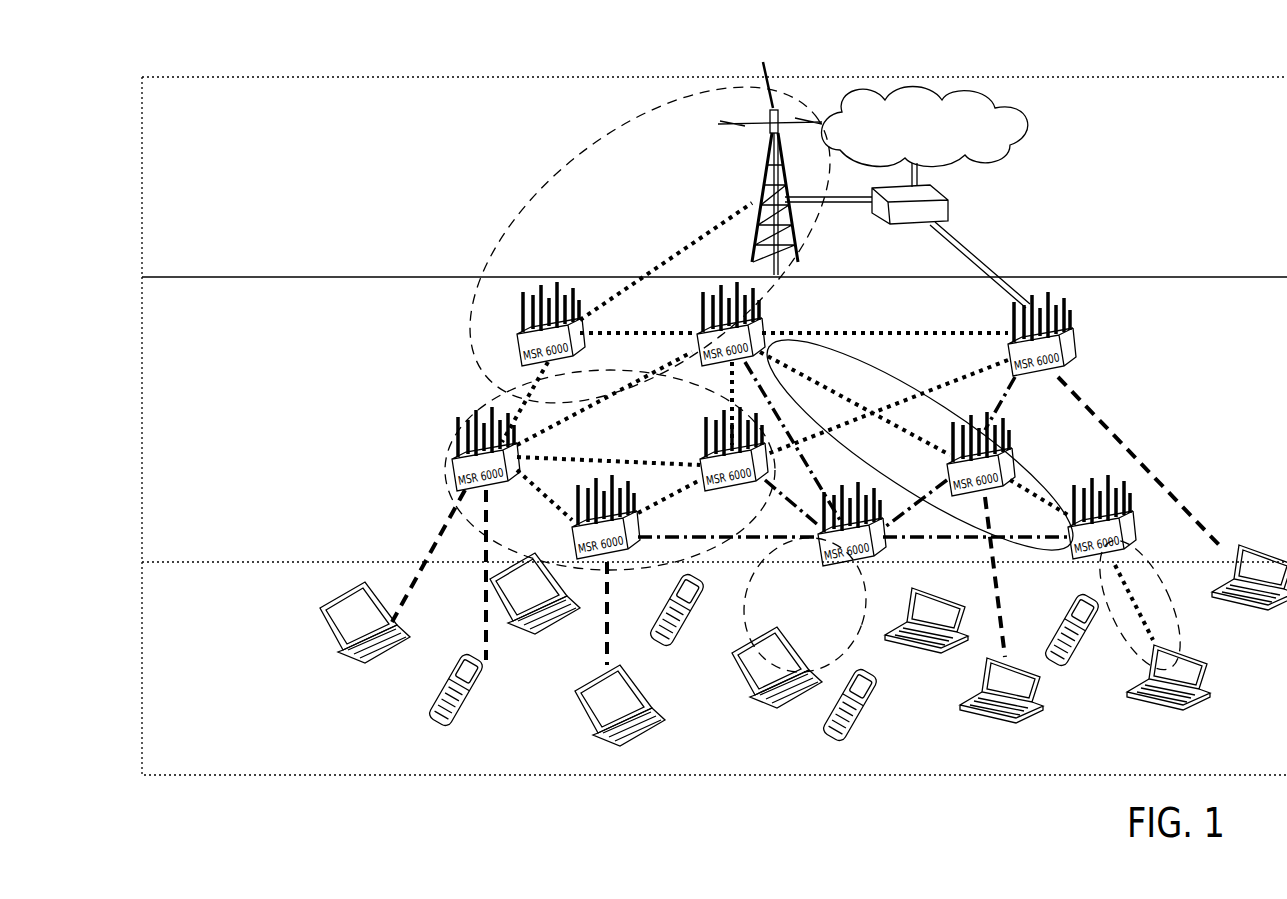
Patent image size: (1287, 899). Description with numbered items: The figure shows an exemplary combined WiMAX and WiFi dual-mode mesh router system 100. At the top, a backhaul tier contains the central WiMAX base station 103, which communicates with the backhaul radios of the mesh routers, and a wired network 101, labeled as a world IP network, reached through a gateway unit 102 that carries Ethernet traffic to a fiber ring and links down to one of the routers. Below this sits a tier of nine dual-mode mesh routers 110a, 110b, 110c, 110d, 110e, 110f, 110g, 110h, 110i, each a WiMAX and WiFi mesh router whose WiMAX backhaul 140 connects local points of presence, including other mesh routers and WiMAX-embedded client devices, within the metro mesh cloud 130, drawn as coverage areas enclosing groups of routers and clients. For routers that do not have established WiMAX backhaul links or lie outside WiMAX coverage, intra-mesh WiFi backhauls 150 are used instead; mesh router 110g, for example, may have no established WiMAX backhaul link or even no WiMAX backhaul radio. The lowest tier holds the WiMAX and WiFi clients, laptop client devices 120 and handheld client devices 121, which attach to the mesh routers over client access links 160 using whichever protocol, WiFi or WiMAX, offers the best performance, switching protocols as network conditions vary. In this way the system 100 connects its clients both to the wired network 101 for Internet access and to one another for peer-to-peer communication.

The dual-mode mesh router system 100 is at (378, 72).
The wired network 101 is at (948, 153).
The backhaul gateway / Ethernet to fiber ring unit 102 is at (913, 218).
The central WiMAX base station 103 is at (758, 178).
The dual-mode mesh router 110a is at (517, 342).
The dual-mode mesh router 110b is at (762, 329).
The dual-mode mesh router 110c is at (1074, 352).
The dual-mode mesh router 110d is at (455, 470).
The dual-mode mesh router 110e is at (636, 545).
The dual-mode mesh router 110f is at (708, 458).
The dual-mode mesh router 110g is at (890, 549).
The dual-mode mesh router 110h is at (1012, 475).
The dual-mode mesh router 110i is at (1133, 538).
The client device 120 is at (372, 662).
The client device 121 is at (476, 708).
The metro mesh cloud 130 is at (600, 168).
The WiMAX backhaul link 140 is at (650, 275).
The intra-mesh WiFi backhaul 150 is at (822, 497).
The client access link 160 is at (426, 562).